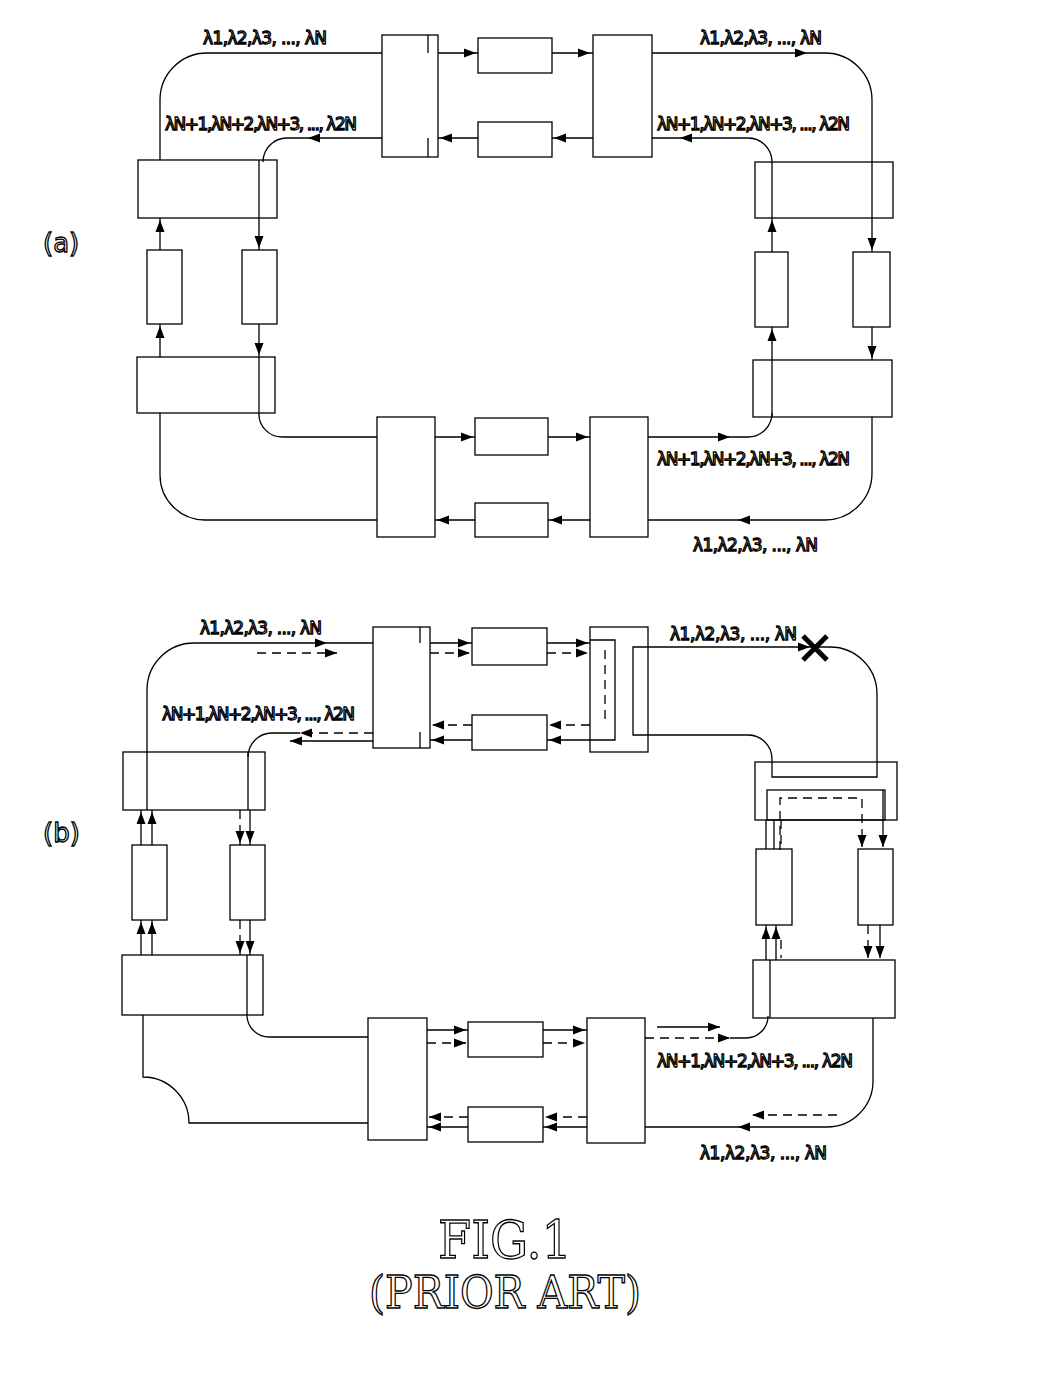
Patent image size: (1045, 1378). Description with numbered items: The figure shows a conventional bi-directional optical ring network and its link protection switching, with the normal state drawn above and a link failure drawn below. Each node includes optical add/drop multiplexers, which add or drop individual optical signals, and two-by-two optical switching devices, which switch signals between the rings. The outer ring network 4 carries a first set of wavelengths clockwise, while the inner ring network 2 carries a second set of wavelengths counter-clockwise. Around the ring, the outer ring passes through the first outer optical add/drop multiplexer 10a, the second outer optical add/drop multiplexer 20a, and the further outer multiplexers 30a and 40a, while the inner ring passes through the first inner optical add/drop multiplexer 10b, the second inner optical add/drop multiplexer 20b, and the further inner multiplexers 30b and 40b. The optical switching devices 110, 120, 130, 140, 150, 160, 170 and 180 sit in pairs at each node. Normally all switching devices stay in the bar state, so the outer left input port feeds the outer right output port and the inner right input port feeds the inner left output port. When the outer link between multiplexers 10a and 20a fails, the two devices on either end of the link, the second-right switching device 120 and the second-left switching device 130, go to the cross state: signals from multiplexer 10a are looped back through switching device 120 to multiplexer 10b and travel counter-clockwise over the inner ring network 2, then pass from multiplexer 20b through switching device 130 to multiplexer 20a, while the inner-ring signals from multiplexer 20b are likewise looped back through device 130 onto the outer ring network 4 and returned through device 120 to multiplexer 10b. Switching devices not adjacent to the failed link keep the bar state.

The inner ring network 2 is at (333, 436).
The outer ring network 4 is at (272, 519).
The first outer optical add/drop multiplexer 10a is at (508, 38).
The first inner optical add/drop multiplexer 10b is at (508, 157).
The second outer optical add/drop multiplexer 20a is at (853, 290).
The second inner optical add/drop multiplexer 20b is at (755, 290).
The outer optical add/drop multiplexer 30a is at (500, 537).
The inner optical add/drop multiplexer 30b is at (505, 418).
The outer optical add/drop multiplexer 40a is at (147, 287).
The inner optical add/drop multiplexer 40b is at (277, 290).
The 2×2 optical switching device 110 is at (392, 157).
The second-right optical switching device 120 is at (610, 157).
The second-left optical switching device 130 is at (755, 190).
The 2×2 optical switching device 140 is at (753, 389).
The 2×2 optical switching device 150 is at (615, 537).
The 2×2 optical switching device 160 is at (395, 537).
The 2×2 optical switching device 170 is at (275, 373).
The 2×2 optical switching device 180 is at (277, 195).